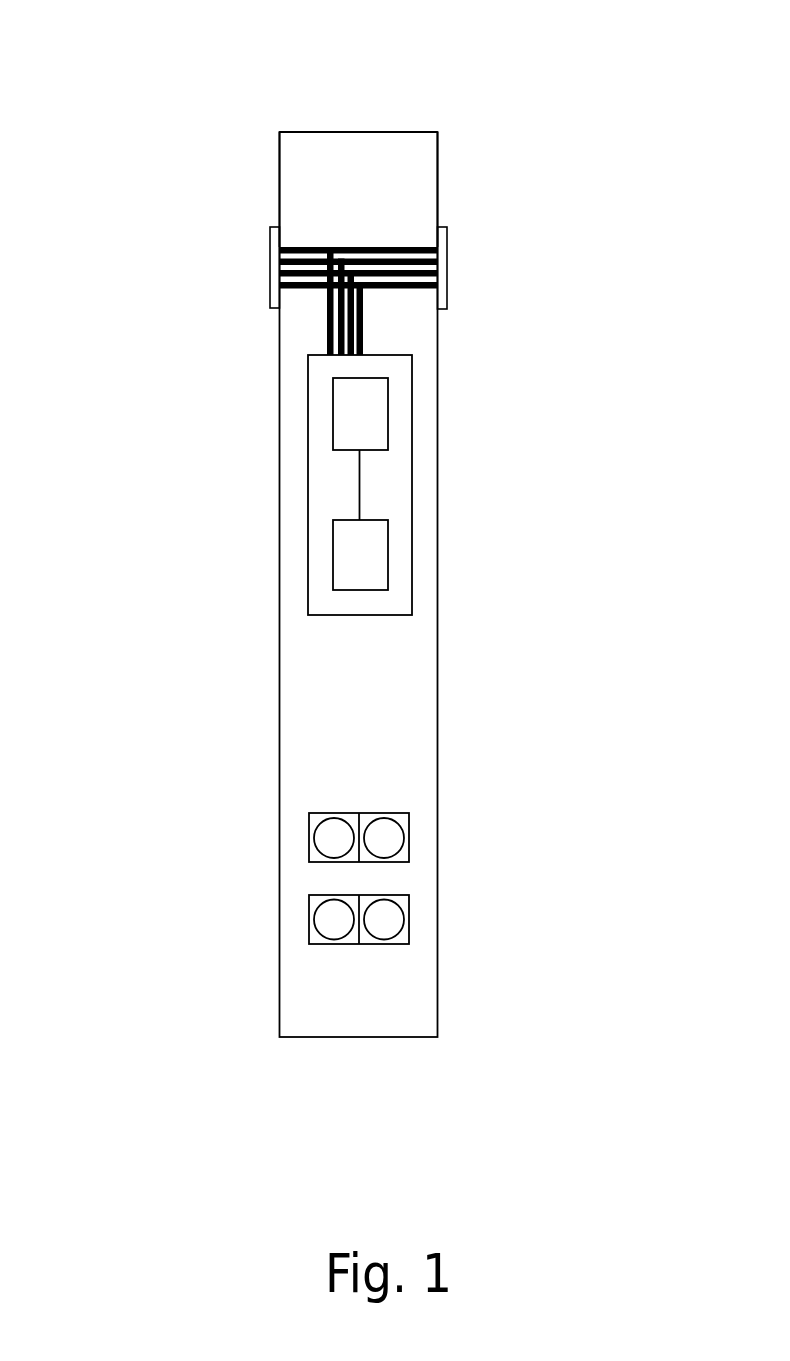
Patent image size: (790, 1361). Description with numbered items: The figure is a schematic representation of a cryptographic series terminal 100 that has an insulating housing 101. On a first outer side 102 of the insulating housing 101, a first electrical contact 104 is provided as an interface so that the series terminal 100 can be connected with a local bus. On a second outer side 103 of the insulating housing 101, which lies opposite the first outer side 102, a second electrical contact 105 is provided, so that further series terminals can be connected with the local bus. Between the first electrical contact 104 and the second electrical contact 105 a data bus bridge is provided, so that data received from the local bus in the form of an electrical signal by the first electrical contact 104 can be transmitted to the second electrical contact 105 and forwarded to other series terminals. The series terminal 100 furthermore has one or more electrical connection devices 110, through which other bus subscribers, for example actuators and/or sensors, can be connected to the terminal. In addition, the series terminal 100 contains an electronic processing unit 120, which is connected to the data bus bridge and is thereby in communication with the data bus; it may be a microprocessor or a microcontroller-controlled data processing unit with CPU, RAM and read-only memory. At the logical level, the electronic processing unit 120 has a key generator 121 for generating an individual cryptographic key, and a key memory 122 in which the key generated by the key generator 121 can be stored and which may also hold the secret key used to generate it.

The series terminal 100 is at (517, 102).
The insulating housing 101 is at (279, 747).
The first outer side 102 is at (279, 173).
The second outer side 103 is at (437, 185).
The first electrical contact 104 is at (270, 267).
The second electrical contact 105 is at (447, 262).
The electrical connection devices 110 is at (418, 842).
The electronic processing unit 120 is at (412, 405).
The key generator 121 is at (333, 418).
The key memory 122 is at (388, 555).